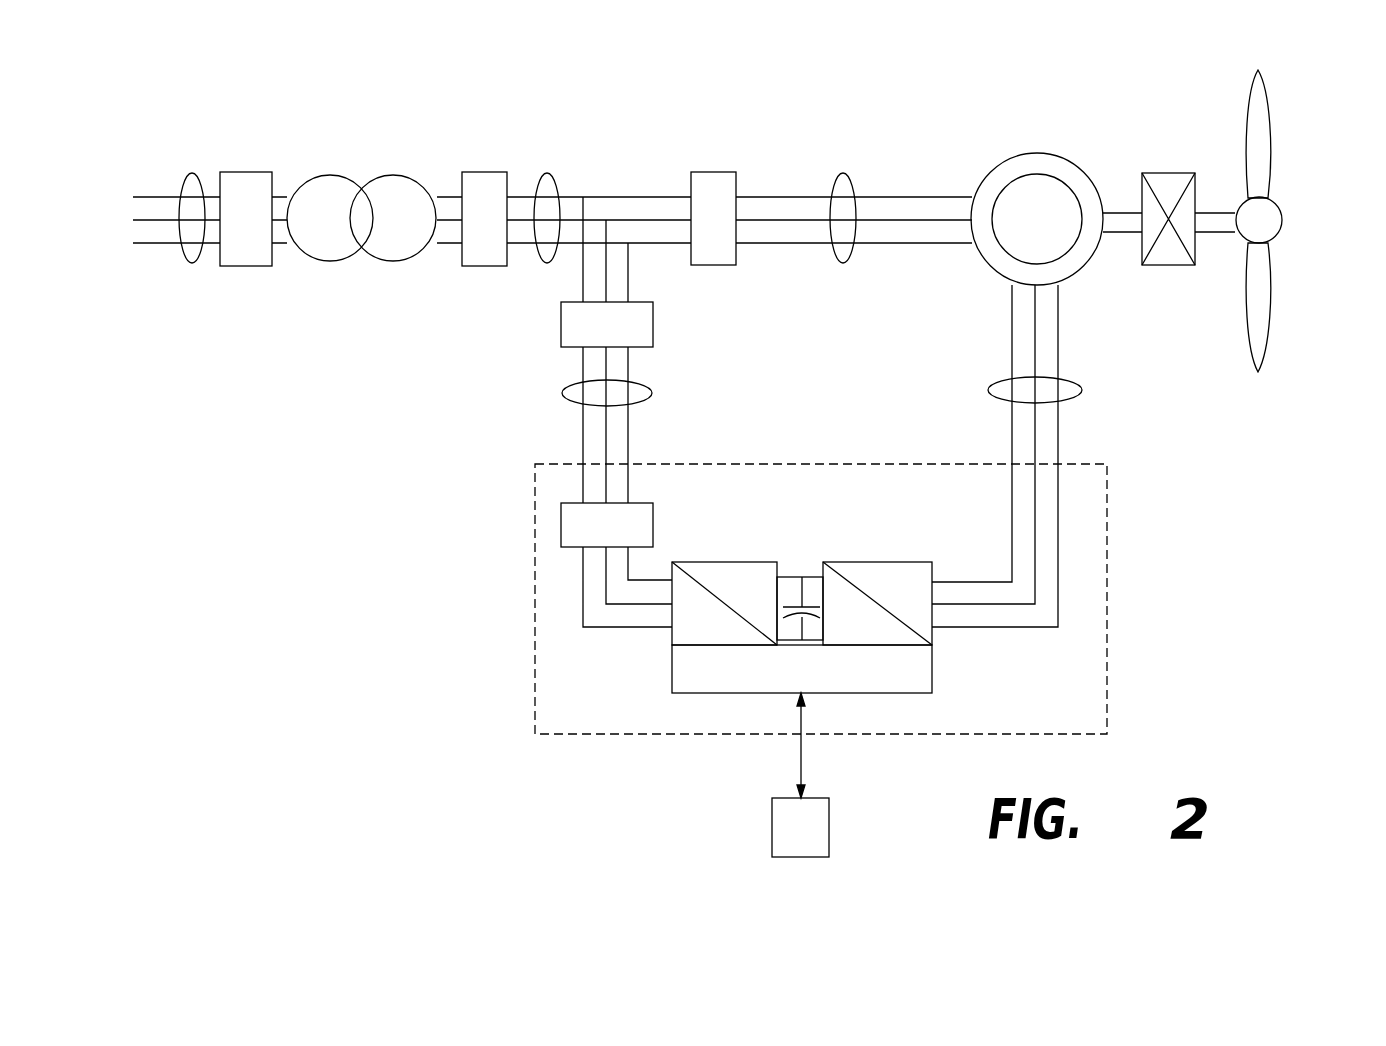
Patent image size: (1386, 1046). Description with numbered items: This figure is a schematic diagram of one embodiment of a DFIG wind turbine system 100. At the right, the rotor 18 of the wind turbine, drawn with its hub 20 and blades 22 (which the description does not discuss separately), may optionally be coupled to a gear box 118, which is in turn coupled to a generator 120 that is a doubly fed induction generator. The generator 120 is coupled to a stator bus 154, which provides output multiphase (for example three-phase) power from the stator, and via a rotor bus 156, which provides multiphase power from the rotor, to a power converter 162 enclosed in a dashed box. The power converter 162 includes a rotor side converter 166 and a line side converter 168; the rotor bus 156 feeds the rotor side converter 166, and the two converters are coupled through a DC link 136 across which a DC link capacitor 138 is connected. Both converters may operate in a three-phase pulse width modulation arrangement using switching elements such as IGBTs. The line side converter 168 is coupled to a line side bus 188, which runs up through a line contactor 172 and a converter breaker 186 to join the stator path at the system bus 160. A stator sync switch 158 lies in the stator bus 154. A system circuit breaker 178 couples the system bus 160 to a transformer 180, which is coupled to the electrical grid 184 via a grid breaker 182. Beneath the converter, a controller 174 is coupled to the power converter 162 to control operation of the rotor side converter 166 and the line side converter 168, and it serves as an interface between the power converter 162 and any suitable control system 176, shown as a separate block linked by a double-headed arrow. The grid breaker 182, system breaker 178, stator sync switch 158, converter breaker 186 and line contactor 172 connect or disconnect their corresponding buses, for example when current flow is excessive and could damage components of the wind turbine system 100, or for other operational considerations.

The rotor 18 is at (1308, 127).
The rotor hub 20 is at (1284, 215).
The rotor blades 22 is at (1273, 148).
The DFIG wind turbine system 100 is at (403, 582).
The gear box 118 is at (1168, 173).
The generator 120 is at (1032, 152).
The DC link 136 is at (808, 577).
The DC link capacitor 138 is at (785, 606).
The stator bus 154 is at (843, 172).
The rotor bus 156 is at (1083, 393).
The stator sync switch 158 is at (712, 172).
The system bus 160 is at (547, 172).
The power converter 162 is at (1107, 565).
The rotor side converter 166 is at (932, 637).
The line side converter 168 is at (668, 637).
The line contactor 172 is at (561, 528).
The controller 174 is at (717, 693).
The control system 176 is at (830, 824).
The system circuit breaker 178 is at (482, 172).
The transformer 180 is at (392, 175).
The grid breaker 182 is at (243, 172).
The electrical grid 184 is at (192, 172).
The converter breaker 186 is at (561, 328).
The line side bus 188 is at (563, 398).